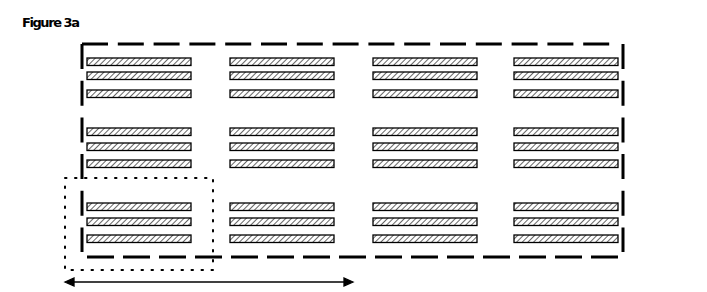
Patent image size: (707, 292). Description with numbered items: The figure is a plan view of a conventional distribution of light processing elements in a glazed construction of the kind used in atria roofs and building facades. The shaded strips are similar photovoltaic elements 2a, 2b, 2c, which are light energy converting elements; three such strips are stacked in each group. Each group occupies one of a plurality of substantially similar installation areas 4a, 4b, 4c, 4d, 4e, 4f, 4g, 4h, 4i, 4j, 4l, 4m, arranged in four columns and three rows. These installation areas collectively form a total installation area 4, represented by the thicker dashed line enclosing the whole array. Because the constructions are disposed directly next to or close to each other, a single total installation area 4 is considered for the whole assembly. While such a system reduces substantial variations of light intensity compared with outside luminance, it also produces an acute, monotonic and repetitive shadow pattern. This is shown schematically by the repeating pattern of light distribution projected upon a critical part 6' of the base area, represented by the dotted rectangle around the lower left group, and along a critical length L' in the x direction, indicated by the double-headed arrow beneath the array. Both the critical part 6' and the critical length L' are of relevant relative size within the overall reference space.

The total installation area 4 is at (341, 150).
The installation area 4a is at (150, 72).
The installation area 4b is at (282, 72).
The installation area 4c is at (425, 72).
The installation area 4d is at (566, 72).
The installation area 4e is at (139, 142).
The installation area 4f is at (282, 142).
The installation area 4g is at (425, 142).
The installation area 4h is at (566, 142).
The installation area 4i is at (139, 215).
The installation area 4j is at (282, 215).
The installation area 4l is at (425, 215).
The installation area 4m is at (566, 215).
The photovoltaic element 2a is at (150, 60).
The photovoltaic element 2b is at (150, 74).
The photovoltaic element 2c is at (150, 92).
The critical part 6' is at (151, 224).
The critical length L' is at (209, 275).